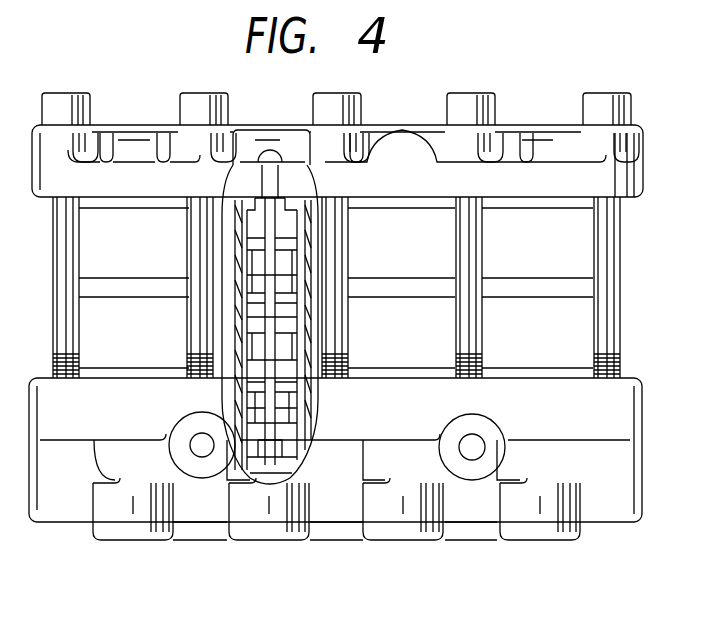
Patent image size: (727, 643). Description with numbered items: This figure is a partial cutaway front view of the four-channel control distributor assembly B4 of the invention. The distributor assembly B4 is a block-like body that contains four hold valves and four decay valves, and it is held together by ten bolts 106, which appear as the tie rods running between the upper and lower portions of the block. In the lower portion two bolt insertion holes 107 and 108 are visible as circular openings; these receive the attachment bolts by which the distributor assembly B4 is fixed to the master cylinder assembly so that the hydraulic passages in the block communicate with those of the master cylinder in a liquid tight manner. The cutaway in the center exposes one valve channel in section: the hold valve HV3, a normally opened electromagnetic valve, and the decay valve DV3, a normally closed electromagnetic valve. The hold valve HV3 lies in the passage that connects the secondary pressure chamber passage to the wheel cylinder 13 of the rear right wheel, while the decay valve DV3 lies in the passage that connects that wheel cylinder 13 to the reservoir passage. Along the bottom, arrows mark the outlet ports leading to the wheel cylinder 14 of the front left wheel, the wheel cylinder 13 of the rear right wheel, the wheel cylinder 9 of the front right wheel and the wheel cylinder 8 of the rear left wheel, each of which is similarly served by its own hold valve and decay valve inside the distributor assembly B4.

The distributor assembly B4 is at (549, 70).
The bolt 106 is at (605, 267).
The bolt insertion hole 107 is at (477, 440).
The bolt insertion hole 108 is at (200, 447).
The decay valve DV3 is at (298, 253).
The hold valve HV3 is at (282, 332).
The wheel cylinder 14 is at (133, 554).
The wheel cylinder 13 is at (269, 554).
The wheel cylinder 9 is at (403, 554).
The wheel cylinder 8 is at (540, 554).